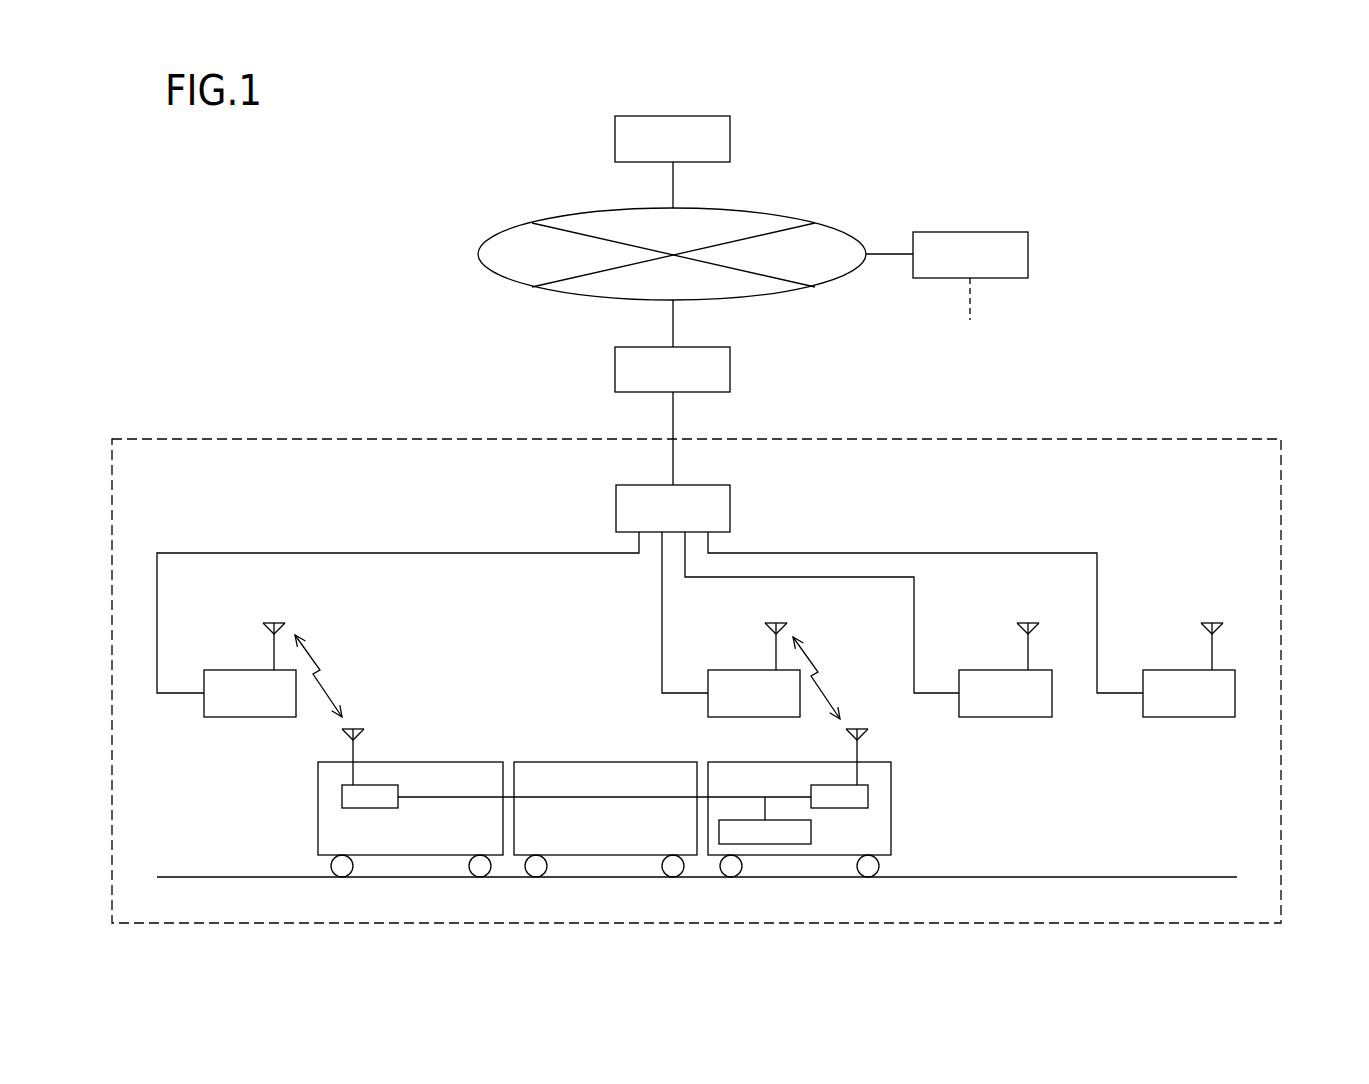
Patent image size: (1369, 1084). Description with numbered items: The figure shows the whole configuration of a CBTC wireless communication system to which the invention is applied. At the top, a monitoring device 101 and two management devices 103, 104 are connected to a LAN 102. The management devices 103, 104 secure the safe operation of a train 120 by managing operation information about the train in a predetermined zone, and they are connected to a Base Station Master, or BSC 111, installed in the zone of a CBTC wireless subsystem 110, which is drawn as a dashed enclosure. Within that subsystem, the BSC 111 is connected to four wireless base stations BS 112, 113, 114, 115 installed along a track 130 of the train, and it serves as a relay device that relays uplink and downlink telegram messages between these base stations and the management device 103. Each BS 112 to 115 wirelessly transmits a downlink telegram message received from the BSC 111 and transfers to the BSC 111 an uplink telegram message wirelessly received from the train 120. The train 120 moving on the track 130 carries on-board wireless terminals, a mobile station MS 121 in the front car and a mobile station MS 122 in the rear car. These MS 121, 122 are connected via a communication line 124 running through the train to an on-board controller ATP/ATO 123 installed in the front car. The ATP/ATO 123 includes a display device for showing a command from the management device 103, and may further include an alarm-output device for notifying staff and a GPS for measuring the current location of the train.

The monitoring device 101 is at (640, 116).
The LAN 102 is at (765, 213).
The management device 103 is at (697, 347).
The management device 104 is at (935, 232).
The CBTC wireless subsystem 110 is at (180, 439).
The Base Station Master (BSC) 111 is at (627, 485).
The wireless base station (BS) 112 is at (228, 670).
The wireless base station (BS) 113 is at (732, 670).
The wireless base station (BS) 114 is at (982, 670).
The wireless base station (BS) 115 is at (1165, 670).
The train 120 is at (457, 762).
The Mobile Station (MS) 121 is at (362, 808).
The Mobile Station (MS) 122 is at (822, 808).
The ATP/ATO 123 is at (762, 844).
The communication line 124 is at (548, 797).
The track 130 is at (983, 877).